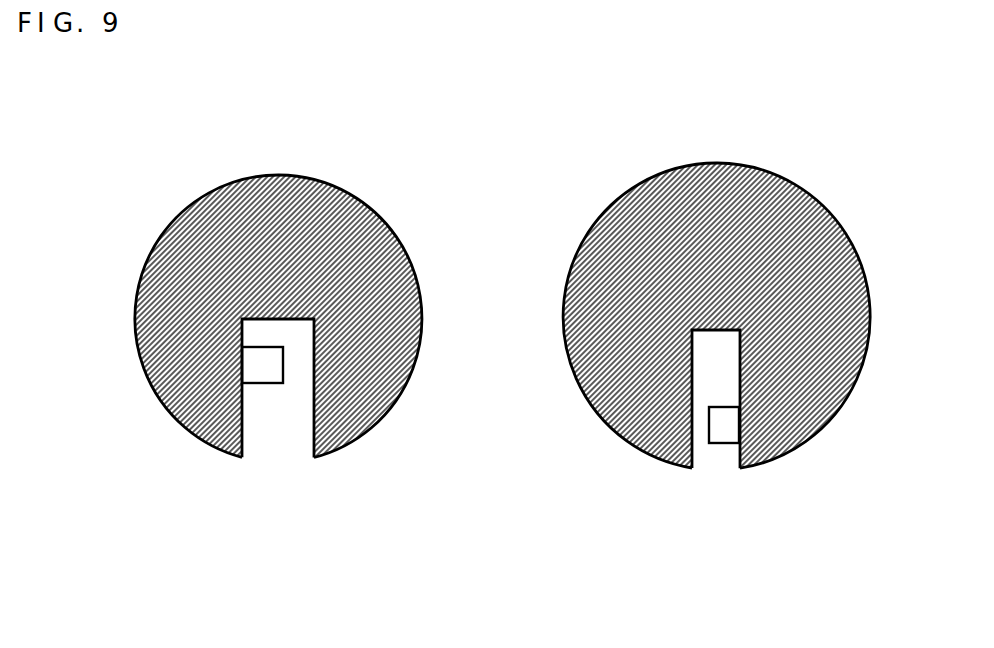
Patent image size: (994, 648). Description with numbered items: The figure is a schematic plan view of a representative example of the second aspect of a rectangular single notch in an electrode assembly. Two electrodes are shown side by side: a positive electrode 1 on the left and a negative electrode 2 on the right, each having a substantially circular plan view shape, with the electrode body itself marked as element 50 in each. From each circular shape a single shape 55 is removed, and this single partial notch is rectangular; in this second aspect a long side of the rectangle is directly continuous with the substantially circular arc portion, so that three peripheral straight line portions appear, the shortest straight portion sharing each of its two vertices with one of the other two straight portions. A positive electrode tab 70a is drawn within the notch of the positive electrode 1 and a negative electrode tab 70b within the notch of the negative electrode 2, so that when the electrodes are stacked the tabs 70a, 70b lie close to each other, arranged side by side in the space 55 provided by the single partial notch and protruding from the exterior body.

The positive electrode 1 is at (195, 165).
The negative electrode 2 is at (848, 175).
The body 50 is at (517, 273).
The space 55 is at (303, 432).
The positive electrode tab 70a is at (255, 376).
The negative electrode tab 70b is at (723, 430).